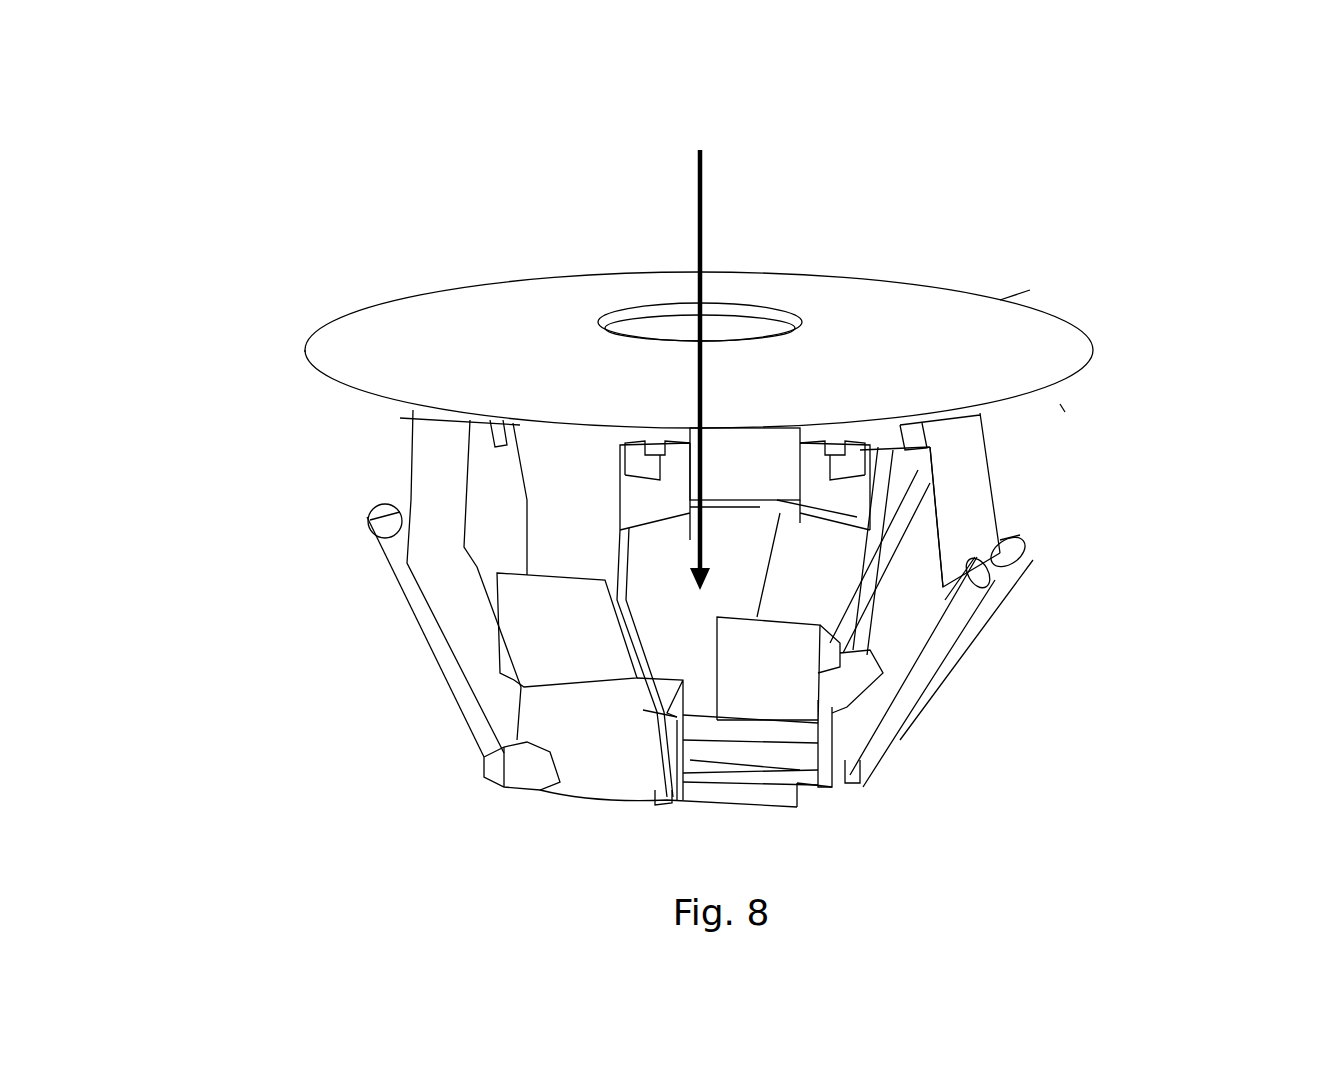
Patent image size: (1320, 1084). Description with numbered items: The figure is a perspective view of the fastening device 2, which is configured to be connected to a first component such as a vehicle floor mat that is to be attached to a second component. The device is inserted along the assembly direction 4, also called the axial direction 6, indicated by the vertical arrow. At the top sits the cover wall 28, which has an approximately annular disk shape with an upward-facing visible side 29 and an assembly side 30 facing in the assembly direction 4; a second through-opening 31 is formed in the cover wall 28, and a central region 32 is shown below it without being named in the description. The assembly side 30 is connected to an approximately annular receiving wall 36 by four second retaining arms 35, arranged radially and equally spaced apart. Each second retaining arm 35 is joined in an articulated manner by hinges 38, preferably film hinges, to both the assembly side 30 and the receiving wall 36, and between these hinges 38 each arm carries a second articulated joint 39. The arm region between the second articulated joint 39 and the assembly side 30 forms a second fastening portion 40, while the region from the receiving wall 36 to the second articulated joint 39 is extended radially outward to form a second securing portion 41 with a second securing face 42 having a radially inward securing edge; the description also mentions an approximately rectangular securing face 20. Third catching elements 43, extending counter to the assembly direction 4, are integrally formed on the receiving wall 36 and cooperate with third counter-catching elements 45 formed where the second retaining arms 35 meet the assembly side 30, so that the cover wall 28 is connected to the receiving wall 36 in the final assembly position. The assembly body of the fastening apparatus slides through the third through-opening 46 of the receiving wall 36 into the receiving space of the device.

The fastening device 2 is at (1200, 110).
The assembly direction 4 is at (698, 212).
The axial direction 6 is at (639, 370).
The securing face 20 is at (1078, 416).
The cover wall 28 is at (873, 353).
The visible side 29 is at (1000, 305).
The assembly side 30 is at (296, 380).
The second through-opening 31 is at (727, 313).
The central hub 32 is at (723, 478).
The second retaining arms 35 is at (423, 627).
The receiving wall 36 is at (797, 793).
The hinges 38 is at (627, 470).
The second articulated joint 39 is at (405, 530).
The second fastening portions 40 is at (550, 528).
The second securing portion 41 is at (393, 507).
The second securing face 42 is at (997, 547).
The third catching elements 43 is at (843, 737).
The third counter-catching elements 45 is at (658, 455).
The third through-opening 46 is at (710, 757).